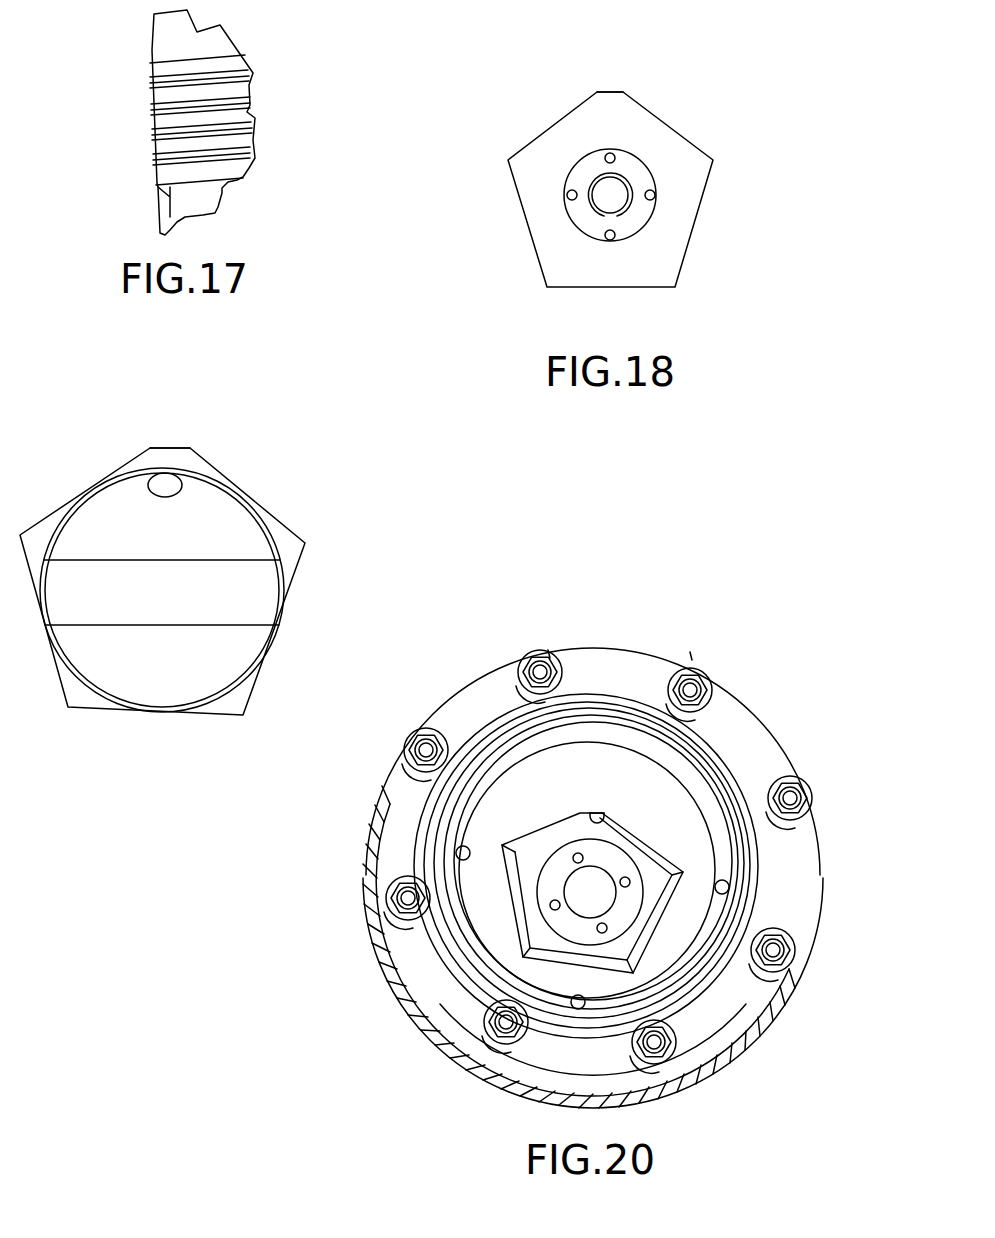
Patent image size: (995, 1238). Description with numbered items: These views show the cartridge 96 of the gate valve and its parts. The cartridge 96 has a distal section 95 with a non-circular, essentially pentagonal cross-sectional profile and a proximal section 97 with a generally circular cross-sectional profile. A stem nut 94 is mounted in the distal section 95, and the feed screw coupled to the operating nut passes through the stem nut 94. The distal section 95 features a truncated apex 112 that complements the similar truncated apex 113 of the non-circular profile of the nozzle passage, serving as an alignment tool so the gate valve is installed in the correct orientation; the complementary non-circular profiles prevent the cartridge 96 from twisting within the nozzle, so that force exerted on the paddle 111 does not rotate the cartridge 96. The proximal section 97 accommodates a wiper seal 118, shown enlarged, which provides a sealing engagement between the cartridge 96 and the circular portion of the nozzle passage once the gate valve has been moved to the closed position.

In FIG. 18, the stem nut 94 is at (648, 166).
In FIG. 20, the stem nut 94 is at (548, 930).
In FIG. 18, the distal section 95 is at (533, 250).
In FIG. 19, the distal section 95 is at (282, 522).
In FIG. 20, the distal section 95 is at (515, 907).
In FIG. 18, the cartridge 96 is at (498, 195).
In FIG. 19, the cartridge 96 is at (310, 587).
In FIG. 19, the proximal section 97 is at (200, 520).
In FIG. 19, the paddle 111 is at (225, 605).
In FIG. 18, the truncated apex 112 is at (610, 92).
In FIG. 19, the truncated apex 112 is at (170, 447).
In FIG. 20, the truncated apex 112 is at (596, 816).
In FIG. 20, the truncated apex 113 is at (603, 818).
In FIG. 17, the wiper seal 118 is at (150, 125).